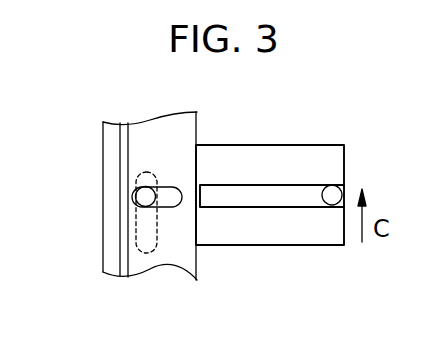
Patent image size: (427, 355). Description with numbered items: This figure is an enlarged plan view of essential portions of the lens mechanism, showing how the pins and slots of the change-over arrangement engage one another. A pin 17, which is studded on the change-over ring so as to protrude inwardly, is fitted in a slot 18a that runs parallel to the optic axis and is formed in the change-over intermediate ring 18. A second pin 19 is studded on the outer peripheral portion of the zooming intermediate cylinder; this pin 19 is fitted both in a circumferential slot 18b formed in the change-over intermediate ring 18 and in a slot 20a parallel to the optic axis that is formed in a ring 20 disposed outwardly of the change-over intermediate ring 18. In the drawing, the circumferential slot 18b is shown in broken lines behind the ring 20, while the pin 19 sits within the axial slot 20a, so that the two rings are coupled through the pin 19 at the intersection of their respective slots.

The pin 17 is at (326, 187).
The change-over intermediate ring 18 is at (270, 232).
The slot 18a is at (246, 188).
The circumferential slot 18b is at (158, 242).
The pin 19 is at (142, 194).
The ring 20 is at (133, 258).
The slot 20a is at (170, 186).